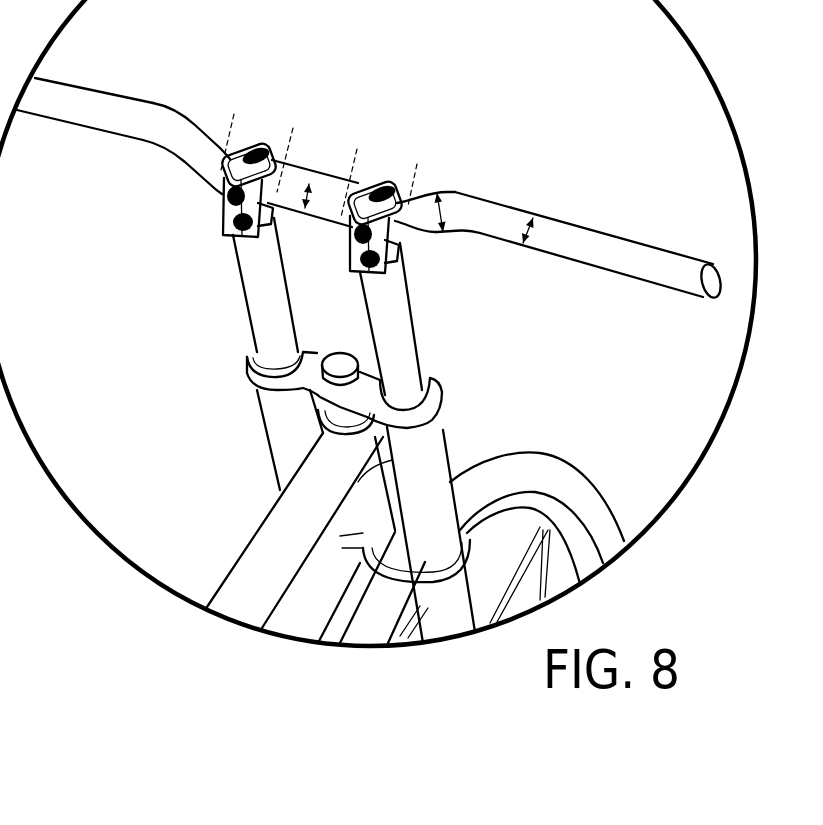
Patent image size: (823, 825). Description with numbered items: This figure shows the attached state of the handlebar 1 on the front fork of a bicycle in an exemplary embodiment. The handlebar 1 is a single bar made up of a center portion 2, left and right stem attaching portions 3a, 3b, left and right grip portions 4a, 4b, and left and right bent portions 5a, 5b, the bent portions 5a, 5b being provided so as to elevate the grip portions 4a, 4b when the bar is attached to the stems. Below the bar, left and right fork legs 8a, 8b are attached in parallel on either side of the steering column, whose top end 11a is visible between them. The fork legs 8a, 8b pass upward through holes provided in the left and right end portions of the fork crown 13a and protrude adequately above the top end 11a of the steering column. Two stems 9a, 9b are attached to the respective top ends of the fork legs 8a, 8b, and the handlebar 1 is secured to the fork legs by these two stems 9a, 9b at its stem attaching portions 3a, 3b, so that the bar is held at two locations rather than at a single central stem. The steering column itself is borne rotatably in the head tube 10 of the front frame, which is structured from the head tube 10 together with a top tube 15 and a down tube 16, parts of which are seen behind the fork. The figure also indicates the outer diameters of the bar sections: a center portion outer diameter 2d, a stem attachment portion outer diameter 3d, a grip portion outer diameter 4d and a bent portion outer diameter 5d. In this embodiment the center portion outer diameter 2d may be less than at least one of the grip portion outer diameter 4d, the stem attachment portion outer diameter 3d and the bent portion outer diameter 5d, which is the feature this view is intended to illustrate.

The handlebar 1 is at (727, 244).
The center portion 2 is at (360, 143).
The center portion outer diameter 2d is at (309, 197).
The stem attaching portion 3a is at (297, 125).
The stem attaching portion 3b is at (417, 161).
The stem attachment portion outer diameter 3d is at (526, 244).
The grip portion 4a is at (93, 107).
The grip portion 4b is at (600, 245).
The grip portion outer diameter 4d is at (536, 235).
The bent portion 5a is at (188, 143).
The bent portion 5b is at (432, 195).
The bent portion outer diameter 5d is at (443, 210).
The fork leg 8a is at (260, 323).
The fork leg 8b is at (403, 348).
The stem 9a is at (222, 211).
The stem 9b is at (390, 240).
The head tube 10 is at (377, 472).
The top end of the steering column 11a is at (334, 358).
The fork crown 13a is at (252, 380).
The top tube 15 is at (278, 538).
The down tube 16 is at (308, 600).